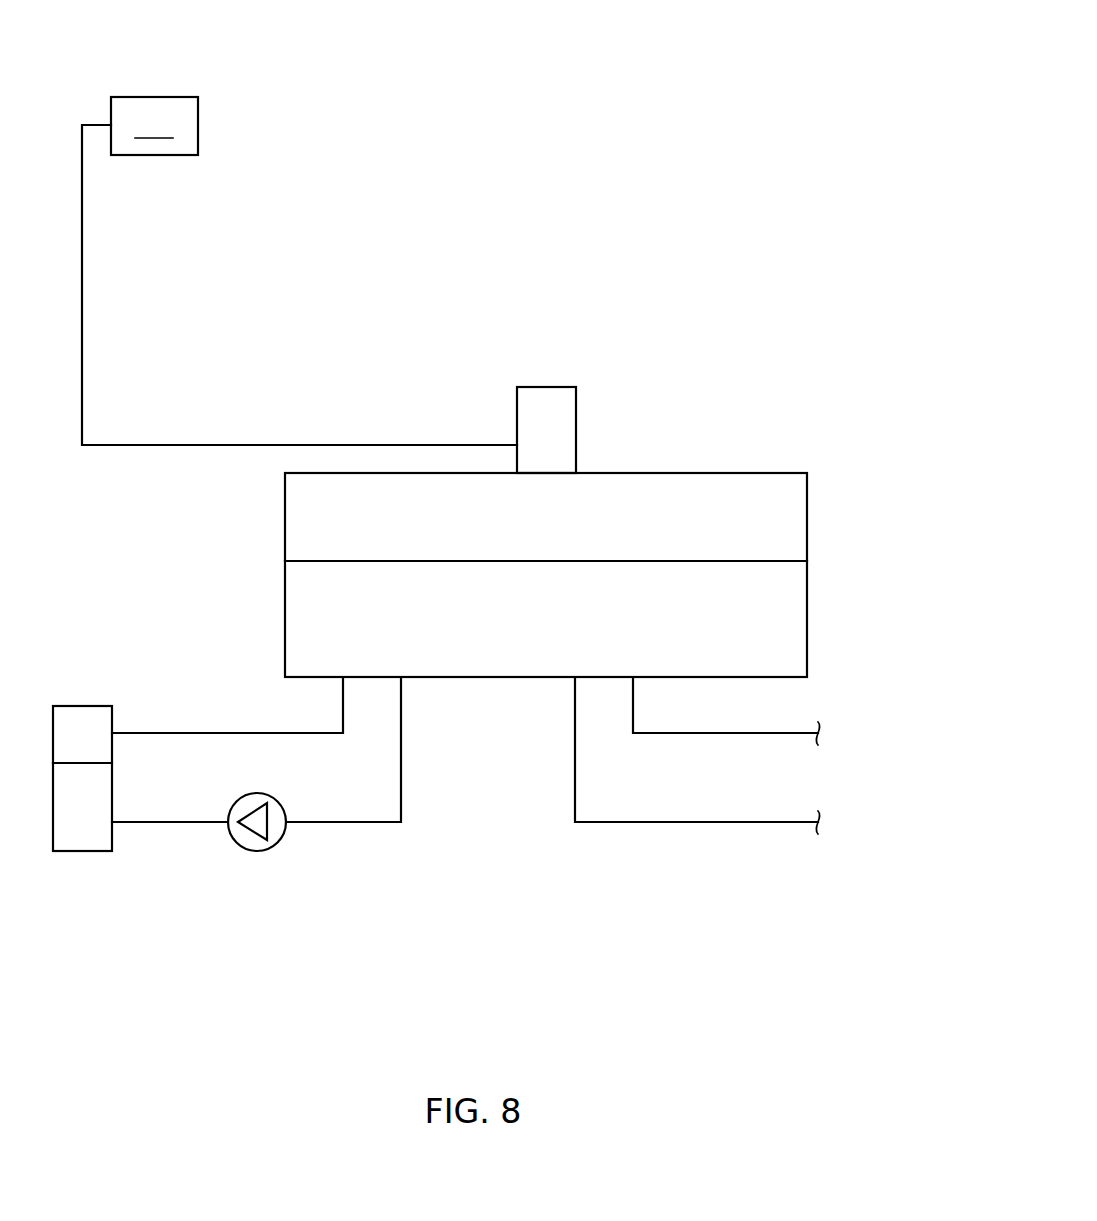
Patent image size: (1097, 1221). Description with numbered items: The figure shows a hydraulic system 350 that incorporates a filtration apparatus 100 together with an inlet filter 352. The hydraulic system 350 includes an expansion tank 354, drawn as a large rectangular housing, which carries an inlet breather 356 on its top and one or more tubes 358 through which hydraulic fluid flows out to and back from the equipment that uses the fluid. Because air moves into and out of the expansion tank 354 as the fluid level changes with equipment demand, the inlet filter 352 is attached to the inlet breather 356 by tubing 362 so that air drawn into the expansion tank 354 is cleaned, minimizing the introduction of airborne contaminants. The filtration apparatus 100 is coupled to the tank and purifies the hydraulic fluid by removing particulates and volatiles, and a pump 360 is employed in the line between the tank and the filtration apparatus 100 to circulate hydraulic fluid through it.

The hydraulic system 350 is at (750, 148).
The inlet filter 352 is at (154, 126).
The expansion tank 354 is at (662, 473).
The inlet breather 356 is at (557, 387).
The tubes 358 is at (750, 733).
The pump 360 is at (253, 852).
The tubing 362 is at (302, 445).
The filtration apparatus 100 is at (82, 853).